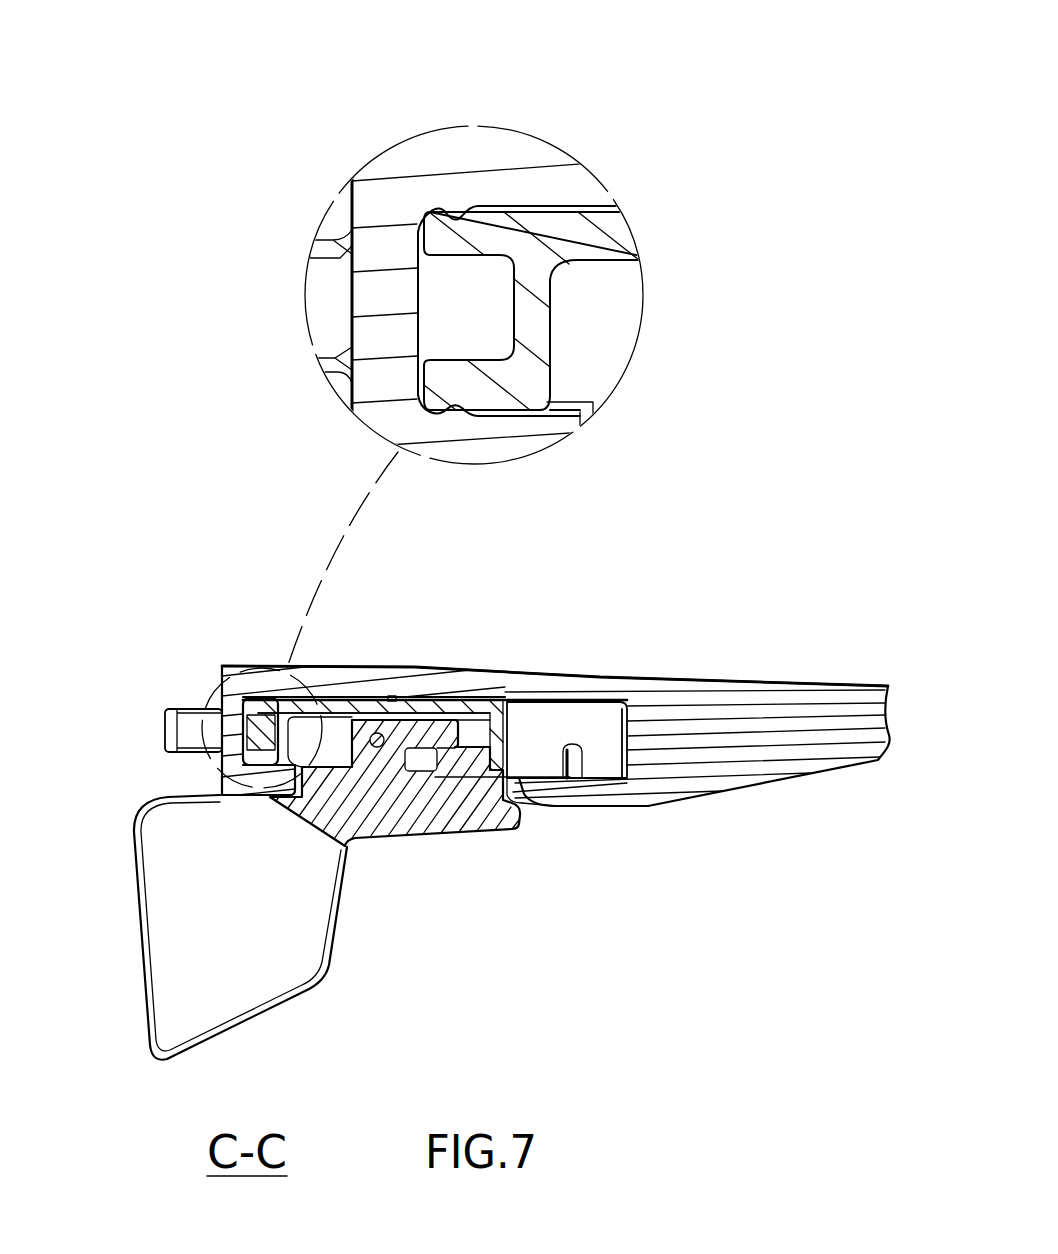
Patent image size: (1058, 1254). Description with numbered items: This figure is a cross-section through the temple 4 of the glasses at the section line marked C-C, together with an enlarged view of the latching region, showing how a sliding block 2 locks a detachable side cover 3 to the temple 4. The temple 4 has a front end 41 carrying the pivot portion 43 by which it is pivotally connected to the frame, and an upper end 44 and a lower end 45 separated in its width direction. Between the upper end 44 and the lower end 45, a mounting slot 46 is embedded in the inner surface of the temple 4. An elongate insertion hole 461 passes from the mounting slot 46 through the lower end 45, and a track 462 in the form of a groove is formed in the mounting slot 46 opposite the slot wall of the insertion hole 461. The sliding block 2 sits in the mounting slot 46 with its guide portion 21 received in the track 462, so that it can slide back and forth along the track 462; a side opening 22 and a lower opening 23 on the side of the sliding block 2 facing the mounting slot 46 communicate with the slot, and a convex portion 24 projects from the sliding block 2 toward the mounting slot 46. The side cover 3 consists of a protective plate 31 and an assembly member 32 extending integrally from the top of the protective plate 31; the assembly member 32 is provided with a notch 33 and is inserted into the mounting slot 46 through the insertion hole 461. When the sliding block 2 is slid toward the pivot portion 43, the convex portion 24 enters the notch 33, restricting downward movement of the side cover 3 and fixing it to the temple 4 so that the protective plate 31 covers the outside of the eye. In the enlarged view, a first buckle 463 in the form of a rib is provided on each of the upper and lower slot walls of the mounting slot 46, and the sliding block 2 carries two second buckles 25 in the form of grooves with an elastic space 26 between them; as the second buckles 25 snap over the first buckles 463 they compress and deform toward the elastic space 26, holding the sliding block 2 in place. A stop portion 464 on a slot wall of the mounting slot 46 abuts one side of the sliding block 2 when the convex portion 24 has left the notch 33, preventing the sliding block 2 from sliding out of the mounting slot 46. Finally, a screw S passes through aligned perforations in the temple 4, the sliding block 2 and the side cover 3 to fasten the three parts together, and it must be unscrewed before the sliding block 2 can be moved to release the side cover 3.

The sliding block 2 is at (570, 232).
The side cover 3 is at (218, 938).
The temple 4 is at (392, 180).
The guide portion 21 is at (440, 708).
The side opening 22 is at (420, 847).
The lower opening 23 is at (465, 760).
The convex portion 24 is at (422, 771).
The second buckle 25 is at (447, 235).
The elastic space 26 is at (462, 297).
The protective plate 31 is at (195, 950).
The assembly member 32 is at (394, 702).
The notch 33 is at (446, 764).
The front end 41 is at (238, 690).
The pivot portion 43 is at (196, 720).
The upper end 44 is at (530, 675).
The lower end 45 is at (567, 852).
The mounting slot 46 is at (572, 448).
The insertion hole 461 is at (557, 796).
The track 462 is at (425, 690).
The first buckle 463 is at (447, 212).
The stop portion 464 is at (600, 770).
The screw S is at (371, 745).